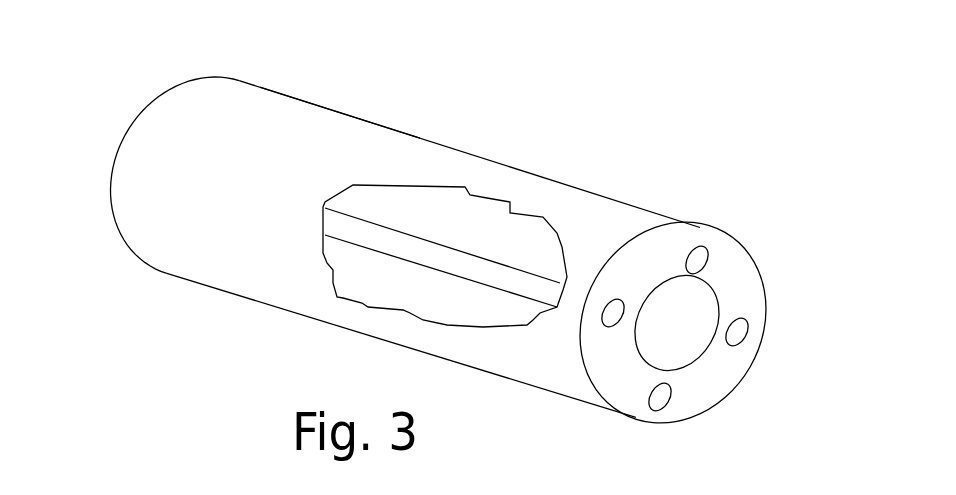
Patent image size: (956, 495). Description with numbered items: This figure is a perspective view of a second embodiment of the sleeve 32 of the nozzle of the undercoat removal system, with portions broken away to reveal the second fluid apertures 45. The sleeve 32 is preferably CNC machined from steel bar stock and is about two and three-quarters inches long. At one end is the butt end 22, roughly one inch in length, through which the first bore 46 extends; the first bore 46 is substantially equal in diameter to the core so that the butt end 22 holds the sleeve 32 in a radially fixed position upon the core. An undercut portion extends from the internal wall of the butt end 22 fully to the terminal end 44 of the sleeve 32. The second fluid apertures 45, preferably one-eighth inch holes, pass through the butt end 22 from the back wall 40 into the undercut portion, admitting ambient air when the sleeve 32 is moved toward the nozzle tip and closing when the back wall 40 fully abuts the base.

The butt end 22 is at (388, 227).
The sleeve 32 is at (280, 133).
The terminal end 44 is at (157, 97).
The back wall 40 is at (693, 397).
The second fluid apertures 45 is at (697, 262).
The first bore 46 is at (678, 333).